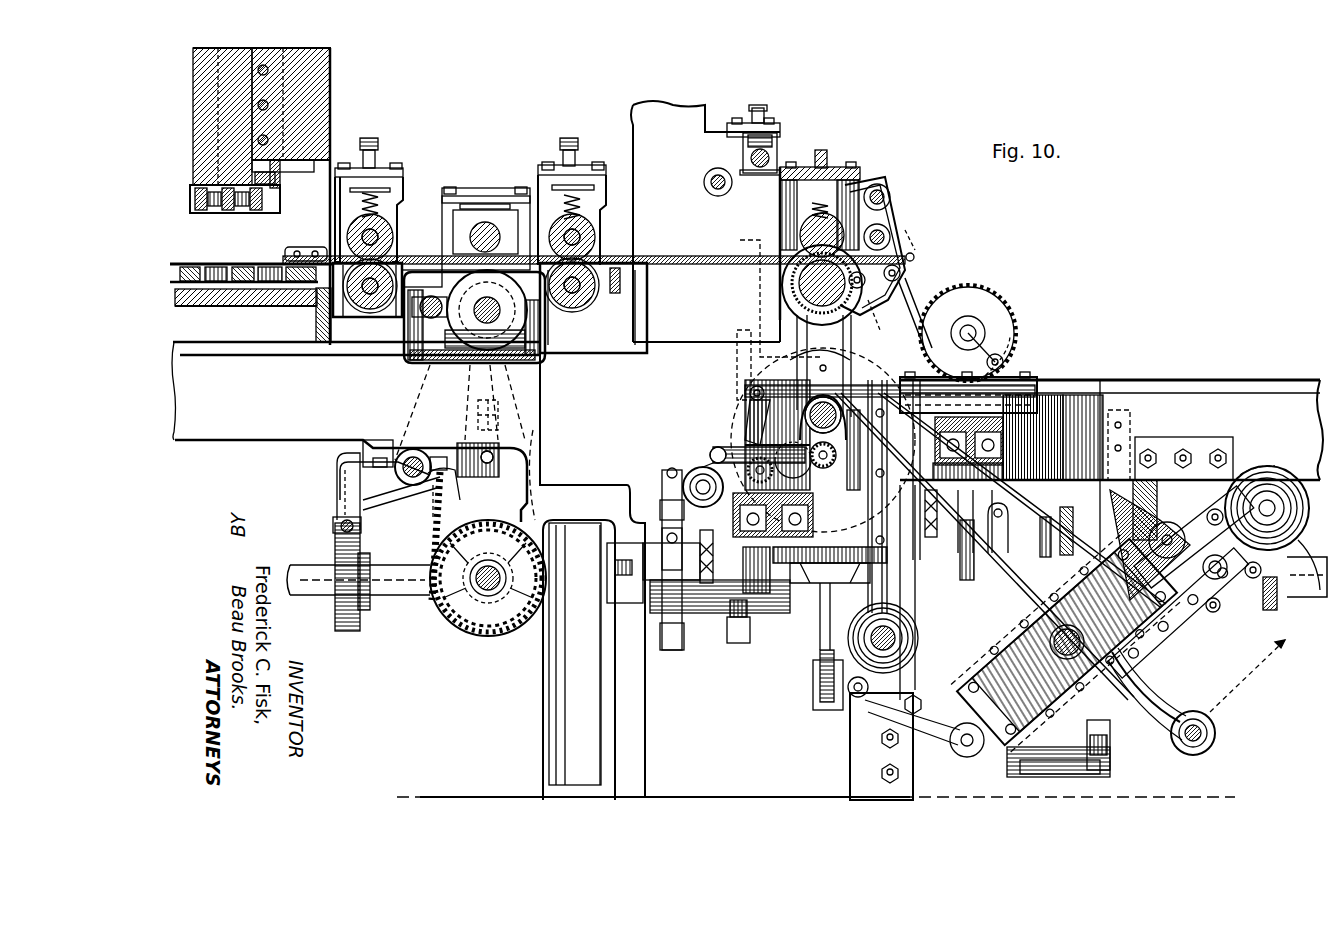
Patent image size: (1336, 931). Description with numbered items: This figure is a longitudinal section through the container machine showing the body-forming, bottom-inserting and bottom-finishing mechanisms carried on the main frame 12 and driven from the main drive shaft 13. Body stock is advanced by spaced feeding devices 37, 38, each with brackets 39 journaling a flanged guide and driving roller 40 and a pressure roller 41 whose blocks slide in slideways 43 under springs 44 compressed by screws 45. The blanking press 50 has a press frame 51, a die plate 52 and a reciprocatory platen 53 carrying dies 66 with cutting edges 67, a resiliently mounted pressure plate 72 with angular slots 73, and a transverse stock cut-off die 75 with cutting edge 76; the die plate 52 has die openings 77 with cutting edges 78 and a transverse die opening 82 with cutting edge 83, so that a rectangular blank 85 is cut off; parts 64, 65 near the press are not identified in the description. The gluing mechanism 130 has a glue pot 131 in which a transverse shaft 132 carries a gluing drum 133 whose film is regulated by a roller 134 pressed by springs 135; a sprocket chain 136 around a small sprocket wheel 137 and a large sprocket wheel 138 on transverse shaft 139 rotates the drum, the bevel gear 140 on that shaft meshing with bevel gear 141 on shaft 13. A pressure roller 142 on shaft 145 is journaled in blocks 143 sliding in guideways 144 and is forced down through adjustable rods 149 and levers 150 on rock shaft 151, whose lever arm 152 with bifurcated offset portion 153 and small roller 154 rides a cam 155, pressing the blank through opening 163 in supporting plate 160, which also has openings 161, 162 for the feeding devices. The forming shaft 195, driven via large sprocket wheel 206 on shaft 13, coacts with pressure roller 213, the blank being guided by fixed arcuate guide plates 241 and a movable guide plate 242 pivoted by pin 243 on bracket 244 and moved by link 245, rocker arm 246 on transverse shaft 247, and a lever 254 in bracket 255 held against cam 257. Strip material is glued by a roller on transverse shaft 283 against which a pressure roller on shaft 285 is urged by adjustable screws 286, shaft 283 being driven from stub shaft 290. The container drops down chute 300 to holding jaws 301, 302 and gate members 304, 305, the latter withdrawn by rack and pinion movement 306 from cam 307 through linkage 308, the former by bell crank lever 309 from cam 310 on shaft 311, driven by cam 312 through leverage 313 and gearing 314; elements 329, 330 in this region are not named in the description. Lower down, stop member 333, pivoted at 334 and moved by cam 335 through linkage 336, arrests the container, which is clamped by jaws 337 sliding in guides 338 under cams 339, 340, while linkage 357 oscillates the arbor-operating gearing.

The main frame 12 is at (645, 421).
The main drive shaft 13 is at (307, 565).
The feeding device 37 is at (369, 92).
The feeding device 38 is at (570, 90).
The brackets 39 is at (400, 247).
The flanged guide and driving roller 40 is at (402, 265).
The pressure roller 41 is at (395, 233).
The slideways 43 is at (385, 212).
The springs 44 is at (388, 190).
The screws 45 is at (393, 164).
The reciprocatory blanking press 50 is at (334, 62).
The press frame 51 is at (330, 92).
The die plate 52 is at (178, 266).
The reciprocatory platen 53 is at (203, 162).
The guide strip 64 is at (200, 266).
The guide strip 65 is at (222, 266).
The dies 66 is at (238, 214).
The cutting edge 67 is at (252, 214).
The pressure plate 72 is at (268, 214).
The angular slots 73 is at (255, 225).
The transverse stock cut-off die 75 is at (281, 187).
The cutting edge 76 is at (276, 208).
The die openings 77 is at (186, 284).
The cutting edge 78 is at (238, 284).
The transverse die opening 82 is at (280, 284).
The cutting edge 83 is at (258, 284).
The rectangular blank 85 is at (673, 256).
The gluing mechanism 130 is at (472, 189).
The glue pot 131 is at (540, 350).
The transverse shaft 132 is at (535, 355).
The gluing drum 133 is at (525, 362).
The roller 134 is at (405, 368).
The springs 135 is at (450, 408).
The sprocket chain 136 is at (452, 418).
The small sprocket wheel 137 is at (530, 328).
The large sprocket wheel 138 is at (458, 625).
The transverse shaft 139 is at (485, 582).
The bevel gear 140 is at (495, 525).
The bevel gear 141 is at (470, 525).
The pressure roller 142 is at (485, 232).
The blocks 143 is at (464, 228).
The guideways 144 is at (497, 233).
The shaft 145 is at (492, 232).
The adjustable rods 149 is at (535, 437).
The levers 150 is at (535, 457).
The transverse rock shaft 151 is at (385, 490).
The lever arm 152 is at (375, 495).
The bifurcated offset portion 153 is at (364, 530).
The small roller 154 is at (336, 526).
The cam 155 is at (337, 618).
The supporting plate 160 is at (633, 270).
The opening 161 is at (372, 304).
The opening 162 is at (626, 323).
The opening 163 is at (455, 267).
The transverse shaft 195 is at (808, 284).
The large sprocket wheel 206 is at (930, 650).
The pressure roller 213 is at (800, 233).
The fixed arcuate guide plates 241 is at (784, 275).
The movable arcuate guide plate 242 is at (905, 292).
The pin 243 is at (900, 270).
The bracket 244 is at (893, 202).
The link 245 is at (926, 312).
The rocker arm 246 is at (895, 268).
The transverse shaft 247 is at (892, 238).
The lever 254 is at (1008, 516).
The bracket 255 is at (1005, 498).
The cam 257 is at (965, 605).
The transverse shaft 283 is at (718, 175).
The transverse shaft 285 is at (765, 150).
The adjustable screws 286 is at (765, 113).
The transverse stub shaft 290 is at (877, 188).
The chute 300 is at (810, 380).
The holding jaw 301 is at (810, 398).
The holding jaw 302 is at (850, 385).
The slidable gate member 304 is at (750, 387).
The slidable gate member 305 is at (880, 390).
The rack and pinion movement 306 is at (1000, 340).
The cam 307 is at (1046, 557).
The linkage 308 is at (1003, 358).
The bell crank lever 309 is at (752, 410).
The cam 310 is at (768, 440).
The shaft 311 is at (790, 455).
The cam 312 is at (686, 640).
The leverage 313 is at (703, 468).
The gearing 314 is at (748, 462).
The block 329 is at (752, 630).
The shaft 330 is at (737, 633).
The stop member 333 is at (1156, 668).
The pivot 334 is at (1150, 650).
The cam 335 is at (1268, 490).
The linkage 336 is at (1195, 625).
The cooperating jaws 337 is at (1178, 526).
The guides 338 is at (1130, 525).
The cam 339 is at (1300, 490).
The cam 340 is at (865, 677).
The linkage 357 is at (1115, 766).